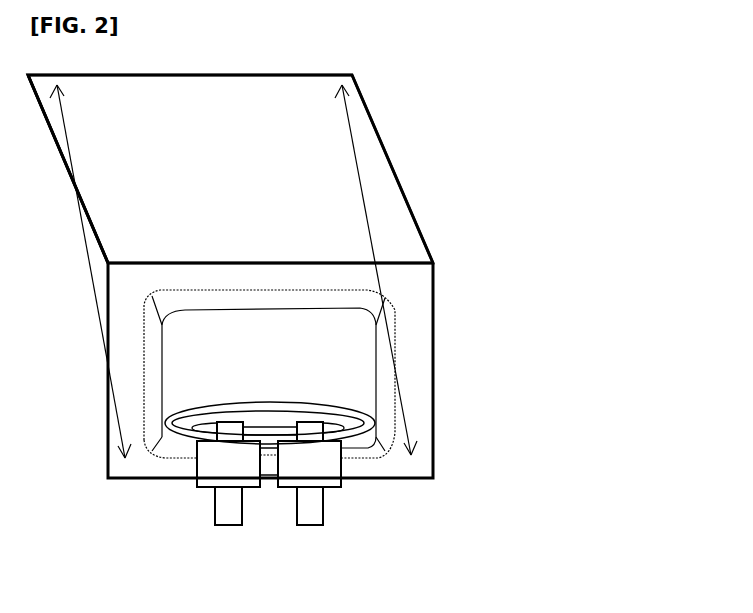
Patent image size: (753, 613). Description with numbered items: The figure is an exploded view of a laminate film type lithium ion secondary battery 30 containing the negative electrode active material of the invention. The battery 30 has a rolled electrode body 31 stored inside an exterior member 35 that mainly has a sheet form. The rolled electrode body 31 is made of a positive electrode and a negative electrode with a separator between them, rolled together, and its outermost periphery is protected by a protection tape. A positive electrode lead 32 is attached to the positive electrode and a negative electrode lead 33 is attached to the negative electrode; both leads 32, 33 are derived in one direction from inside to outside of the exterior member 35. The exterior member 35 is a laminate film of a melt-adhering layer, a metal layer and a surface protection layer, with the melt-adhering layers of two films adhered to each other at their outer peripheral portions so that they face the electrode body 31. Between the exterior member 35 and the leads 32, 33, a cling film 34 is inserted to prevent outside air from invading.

The laminate film type lithium ion secondary battery 30 is at (387, 90).
The rolled electrode body 31 is at (342, 360).
The positive electrode lead 32 is at (225, 511).
The negative electrode lead 33 is at (310, 513).
The cling film 34 is at (329, 468).
The exterior member 35 is at (287, 175).